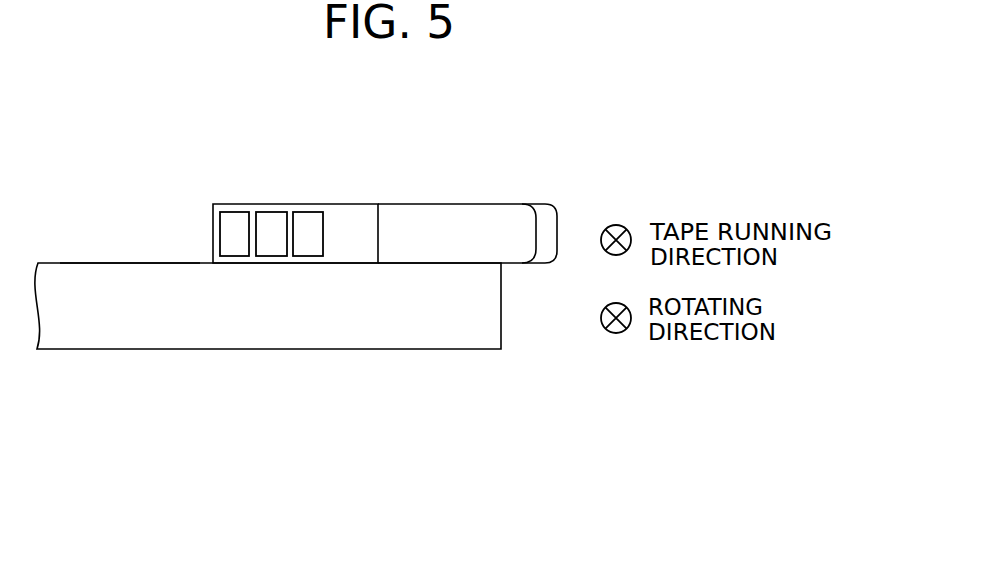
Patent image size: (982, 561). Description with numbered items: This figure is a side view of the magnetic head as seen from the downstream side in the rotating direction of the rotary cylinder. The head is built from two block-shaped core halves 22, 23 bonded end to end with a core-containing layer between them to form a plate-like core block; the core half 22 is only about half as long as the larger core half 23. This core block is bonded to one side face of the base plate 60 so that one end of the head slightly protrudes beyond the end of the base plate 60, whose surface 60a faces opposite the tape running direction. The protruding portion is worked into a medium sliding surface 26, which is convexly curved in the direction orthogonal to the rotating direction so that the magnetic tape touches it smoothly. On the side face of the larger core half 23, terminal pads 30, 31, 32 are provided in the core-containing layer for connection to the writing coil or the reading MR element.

The core half 22 is at (450, 217).
The core half 23 is at (332, 206).
The medium sliding surface 26 is at (547, 218).
The terminal pad 30 is at (303, 227).
The terminal pad 31 is at (268, 227).
The terminal pad 32 is at (228, 227).
The base plate 60 is at (488, 318).
The surface of the base plate 60a is at (118, 262).